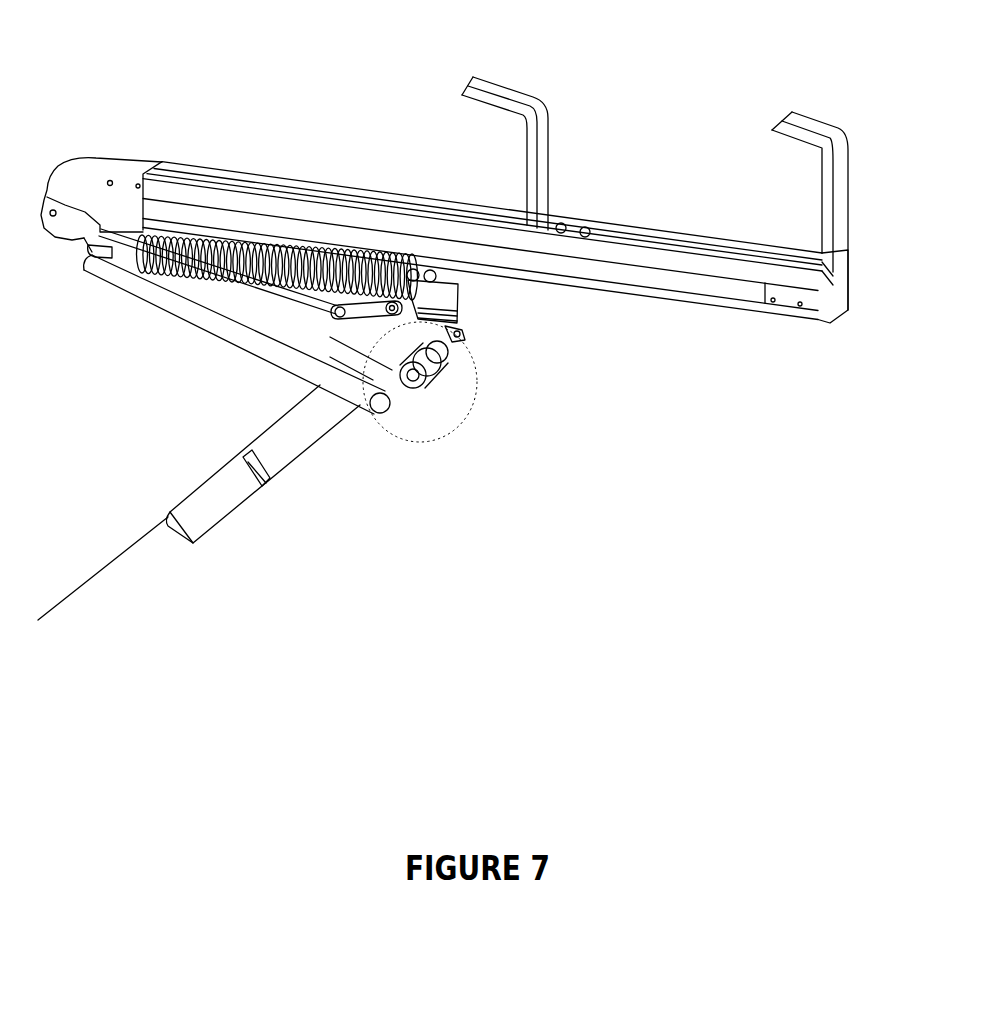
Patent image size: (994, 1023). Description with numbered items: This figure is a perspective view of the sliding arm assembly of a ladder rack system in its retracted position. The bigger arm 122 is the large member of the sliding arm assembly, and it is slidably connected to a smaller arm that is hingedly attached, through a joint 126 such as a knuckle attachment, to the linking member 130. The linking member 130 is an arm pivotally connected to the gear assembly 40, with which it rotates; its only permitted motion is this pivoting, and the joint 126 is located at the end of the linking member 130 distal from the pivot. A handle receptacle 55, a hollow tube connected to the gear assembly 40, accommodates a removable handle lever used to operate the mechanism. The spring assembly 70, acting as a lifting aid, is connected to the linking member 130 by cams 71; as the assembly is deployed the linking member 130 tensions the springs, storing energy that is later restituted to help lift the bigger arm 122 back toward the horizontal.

The bigger arm 122 is at (369, 177).
The joint 126 is at (115, 154).
The spring assembly 70 is at (465, 300).
The cams 71 is at (381, 315).
The linking member 130 is at (216, 340).
The gear assembly 40 is at (479, 374).
The handle receptacle 55 is at (183, 562).